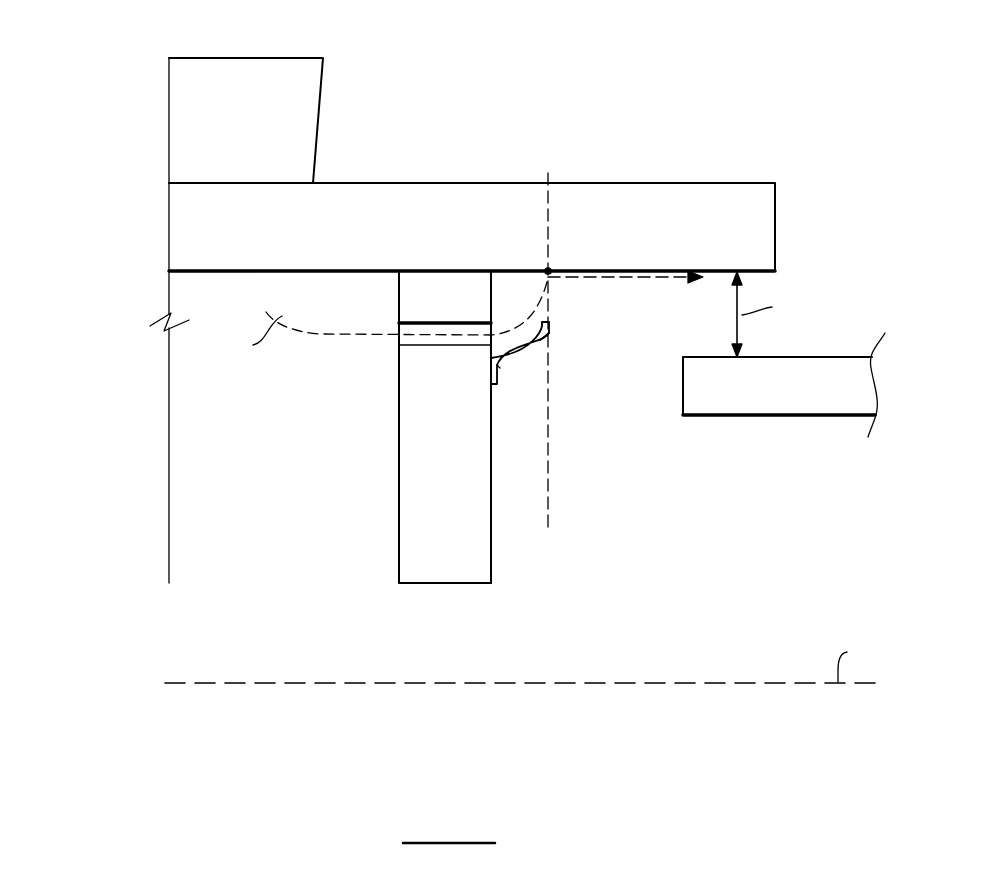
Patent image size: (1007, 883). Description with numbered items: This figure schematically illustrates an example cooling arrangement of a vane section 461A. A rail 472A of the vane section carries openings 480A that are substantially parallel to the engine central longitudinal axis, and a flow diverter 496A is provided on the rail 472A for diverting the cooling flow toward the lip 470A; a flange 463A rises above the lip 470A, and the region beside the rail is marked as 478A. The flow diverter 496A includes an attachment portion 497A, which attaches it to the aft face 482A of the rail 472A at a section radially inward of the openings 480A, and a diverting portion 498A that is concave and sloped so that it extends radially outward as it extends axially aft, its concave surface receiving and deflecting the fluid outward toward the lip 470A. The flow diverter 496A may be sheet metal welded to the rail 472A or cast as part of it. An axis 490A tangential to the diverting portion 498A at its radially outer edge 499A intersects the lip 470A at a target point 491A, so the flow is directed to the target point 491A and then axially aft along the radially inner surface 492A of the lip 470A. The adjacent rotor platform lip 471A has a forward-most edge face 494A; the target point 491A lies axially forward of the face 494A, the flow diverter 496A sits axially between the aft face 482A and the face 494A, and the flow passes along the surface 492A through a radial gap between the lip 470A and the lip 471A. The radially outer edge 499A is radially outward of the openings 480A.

The vane section 461A is at (125, 115).
The flange 463A is at (334, 217).
The lip 470A is at (648, 217).
The adjacent rotor platform lip 471A is at (784, 393).
The rail 472A is at (421, 480).
The cavity 478A is at (265, 450).
The openings 480A is at (421, 350).
The aft face 482A is at (491, 437).
The axis 490A is at (546, 175).
The target point 491A is at (550, 268).
The radially inner surface 492A is at (652, 273).
The forward-most edge face 494A is at (683, 385).
The flow diverter 496A is at (555, 340).
The attachment portion 497A is at (500, 368).
The diverting portion 498A is at (552, 327).
The radially outer edge 499A is at (548, 322).